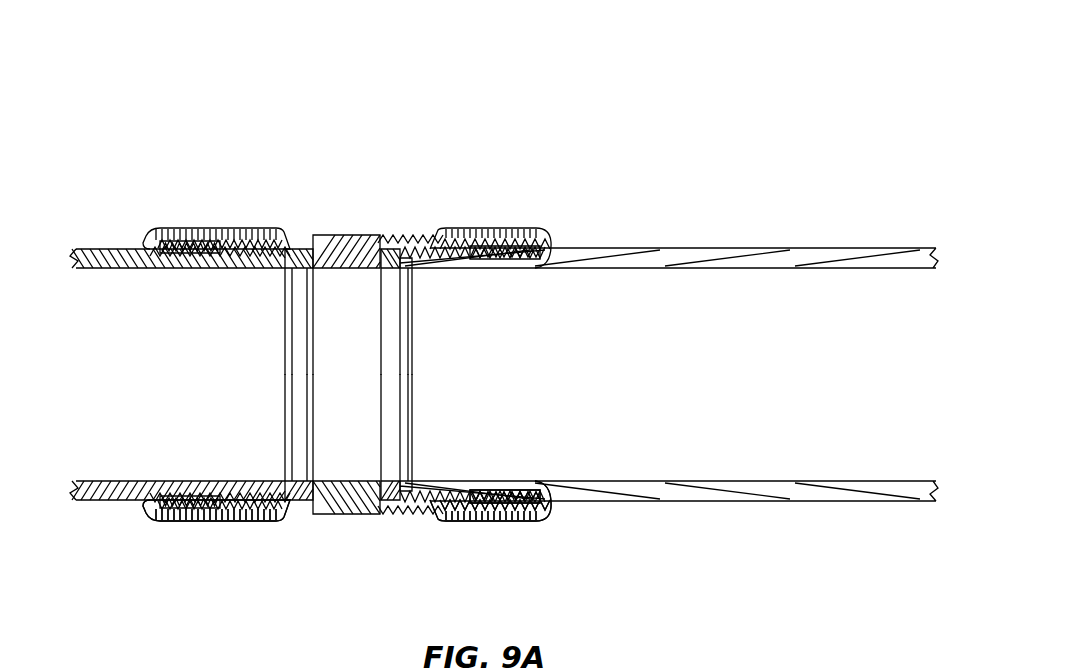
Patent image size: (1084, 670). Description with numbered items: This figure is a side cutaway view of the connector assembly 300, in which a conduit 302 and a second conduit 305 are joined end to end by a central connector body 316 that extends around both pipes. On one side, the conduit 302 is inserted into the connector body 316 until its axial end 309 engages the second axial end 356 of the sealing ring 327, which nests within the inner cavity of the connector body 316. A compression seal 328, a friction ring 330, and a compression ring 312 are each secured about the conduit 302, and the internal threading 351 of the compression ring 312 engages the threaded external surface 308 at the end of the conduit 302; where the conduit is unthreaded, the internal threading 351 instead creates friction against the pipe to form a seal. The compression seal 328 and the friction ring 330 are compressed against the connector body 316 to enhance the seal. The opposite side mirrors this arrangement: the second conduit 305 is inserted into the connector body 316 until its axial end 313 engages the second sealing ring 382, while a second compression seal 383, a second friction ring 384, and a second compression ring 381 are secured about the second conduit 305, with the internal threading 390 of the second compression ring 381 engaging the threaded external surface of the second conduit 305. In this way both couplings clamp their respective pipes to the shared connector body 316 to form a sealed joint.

The connector assembly 300 is at (351, 62).
The conduit 302 is at (685, 280).
The second conduit 305 is at (98, 275).
The threaded external surface 308 is at (477, 515).
The axial end 309 is at (413, 515).
The compression ring 312 is at (527, 515).
The axial end 313 is at (280, 513).
The connector body 316 is at (354, 218).
The sealing ring 327 is at (367, 513).
The compression seal 328 is at (465, 232).
The friction ring 330 is at (487, 230).
The internal threading 351 is at (560, 258).
The second axial end 356 is at (413, 238).
The second compression ring 381 is at (167, 522).
The second sealing ring 382 is at (304, 240).
The second compression seal 383 is at (233, 240).
The second friction ring 384 is at (207, 240).
The internal threading 390 is at (152, 240).